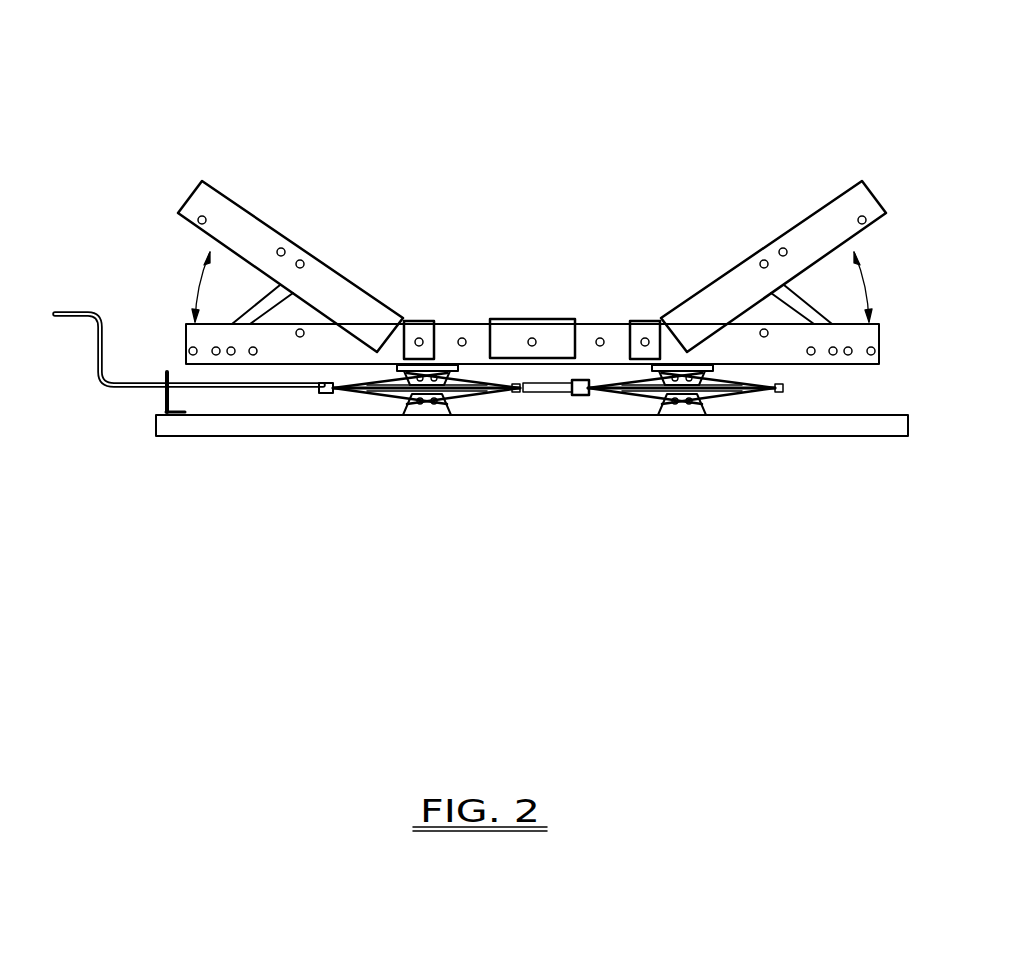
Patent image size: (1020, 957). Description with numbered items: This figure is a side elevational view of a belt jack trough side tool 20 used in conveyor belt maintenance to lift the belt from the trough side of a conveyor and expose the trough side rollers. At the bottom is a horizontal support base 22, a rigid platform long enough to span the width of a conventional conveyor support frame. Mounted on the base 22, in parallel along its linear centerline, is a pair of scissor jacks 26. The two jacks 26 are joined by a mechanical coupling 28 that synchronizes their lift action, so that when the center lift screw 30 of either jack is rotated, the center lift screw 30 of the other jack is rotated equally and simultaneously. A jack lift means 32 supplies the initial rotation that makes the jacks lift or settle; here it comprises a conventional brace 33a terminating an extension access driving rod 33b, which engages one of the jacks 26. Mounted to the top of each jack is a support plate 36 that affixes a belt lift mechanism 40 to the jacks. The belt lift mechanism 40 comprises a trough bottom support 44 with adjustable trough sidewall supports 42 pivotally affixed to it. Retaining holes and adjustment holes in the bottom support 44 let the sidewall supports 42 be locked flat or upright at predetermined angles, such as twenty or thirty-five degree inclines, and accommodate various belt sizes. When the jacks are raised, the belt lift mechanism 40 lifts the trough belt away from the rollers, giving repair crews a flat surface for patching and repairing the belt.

The belt jack trough side tool 20 is at (722, 557).
The horizontal support base 22 is at (822, 425).
The scissor jack 26 is at (558, 430).
The mechanical coupling 28 is at (547, 393).
The center lift screw 30 is at (362, 396).
The jack lift means 32 is at (102, 418).
The brace 33a is at (67, 310).
The extension access driving rod 33b is at (128, 388).
The support plate 36 is at (433, 362).
The belt lift mechanism 40 is at (732, 160).
The adjustable trough sidewall support 42 is at (258, 232).
The trough bottom support 44 is at (547, 330).